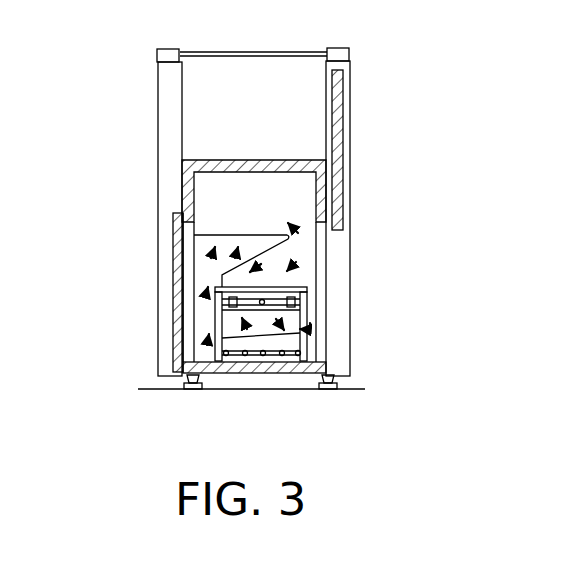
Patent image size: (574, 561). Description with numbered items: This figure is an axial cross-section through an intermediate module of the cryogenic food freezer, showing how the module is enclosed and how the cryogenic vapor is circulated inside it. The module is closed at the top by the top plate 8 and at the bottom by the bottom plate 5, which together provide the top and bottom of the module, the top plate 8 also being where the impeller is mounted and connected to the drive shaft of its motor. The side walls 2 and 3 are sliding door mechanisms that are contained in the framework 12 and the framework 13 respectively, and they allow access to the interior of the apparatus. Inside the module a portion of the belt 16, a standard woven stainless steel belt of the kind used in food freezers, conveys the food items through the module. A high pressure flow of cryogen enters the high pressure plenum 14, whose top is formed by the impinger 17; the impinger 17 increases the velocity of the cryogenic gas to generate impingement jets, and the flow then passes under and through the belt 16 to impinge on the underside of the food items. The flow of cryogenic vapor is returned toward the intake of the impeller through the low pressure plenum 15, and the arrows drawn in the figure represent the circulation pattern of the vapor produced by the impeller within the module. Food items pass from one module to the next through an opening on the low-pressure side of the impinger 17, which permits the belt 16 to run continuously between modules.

The wall 2 is at (343, 170).
The wall 3 is at (160, 311).
The bottom plate 5 is at (296, 378).
The top plate 8 is at (237, 160).
The framework 12 is at (350, 65).
The framework 13 is at (160, 108).
The high pressure plenum 14 is at (236, 327).
The low pressure plenum 15 is at (205, 322).
The belt 16 is at (300, 301).
The impinger 17 is at (303, 288).